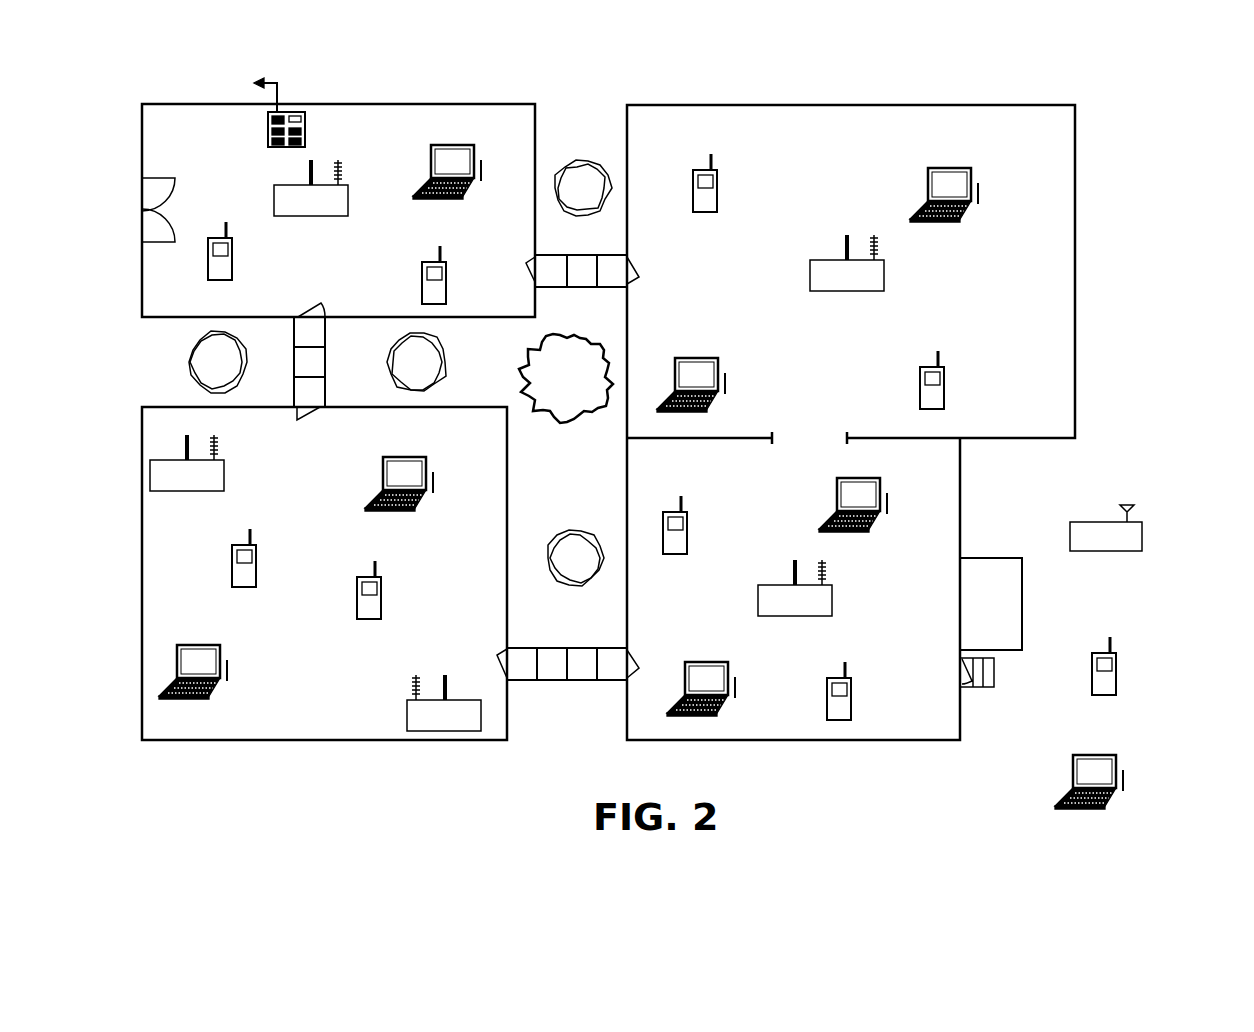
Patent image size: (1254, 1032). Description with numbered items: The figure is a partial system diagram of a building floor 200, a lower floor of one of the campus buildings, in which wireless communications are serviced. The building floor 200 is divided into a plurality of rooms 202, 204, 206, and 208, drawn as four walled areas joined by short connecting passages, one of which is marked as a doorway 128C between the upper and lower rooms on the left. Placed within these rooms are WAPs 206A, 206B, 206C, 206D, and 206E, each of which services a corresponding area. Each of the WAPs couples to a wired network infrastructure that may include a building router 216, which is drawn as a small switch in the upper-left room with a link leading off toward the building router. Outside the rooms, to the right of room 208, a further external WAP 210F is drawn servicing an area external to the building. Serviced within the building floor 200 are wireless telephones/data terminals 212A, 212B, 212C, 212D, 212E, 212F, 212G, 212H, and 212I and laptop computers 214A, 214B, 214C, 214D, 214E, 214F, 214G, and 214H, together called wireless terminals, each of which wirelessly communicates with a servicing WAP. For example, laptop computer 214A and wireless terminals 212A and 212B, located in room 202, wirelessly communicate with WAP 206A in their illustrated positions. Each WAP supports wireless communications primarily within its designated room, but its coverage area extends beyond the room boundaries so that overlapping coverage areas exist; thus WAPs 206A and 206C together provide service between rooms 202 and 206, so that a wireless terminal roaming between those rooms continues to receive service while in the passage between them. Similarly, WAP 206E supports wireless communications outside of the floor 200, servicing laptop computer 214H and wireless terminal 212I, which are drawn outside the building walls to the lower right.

The building floor 200 is at (235, 779).
The room 202 is at (497, 104).
The room 204 is at (705, 104).
The room 206 is at (295, 742).
The room 208 is at (789, 742).
The doorway 128C is at (300, 416).
The building router 216 is at (268, 132).
The WAP 206A is at (348, 198).
The WAP 206B is at (885, 274).
The WAP 206C is at (223, 474).
The WAP 206D is at (407, 715).
The WAP 206E is at (832, 598).
The external wireless access point 210F is at (1142, 532).
The wireless telephone/data terminal 212A is at (232, 270).
The wireless telephone/data terminal 212B is at (446, 294).
The wireless telephone/data terminal 212C is at (717, 200).
The wireless telephone/data terminal 212D is at (944, 398).
The wireless telephone/data terminal 212E is at (256, 575).
The wireless telephone/data terminal 212F is at (381, 607).
The wireless telephone/data terminal 212G is at (687, 542).
The wireless telephone/data terminal 212H is at (851, 708).
The wireless telephone/data terminal 212I is at (1116, 683).
The laptop computer 214A is at (450, 145).
The laptop computer 214B is at (694, 358).
The laptop computer 214C is at (947, 168).
The laptop computer 214D is at (196, 645).
The laptop computer 214E is at (402, 457).
The laptop computer 214F is at (704, 662).
The laptop computer 214G is at (856, 478).
The laptop computer 214H is at (1092, 755).